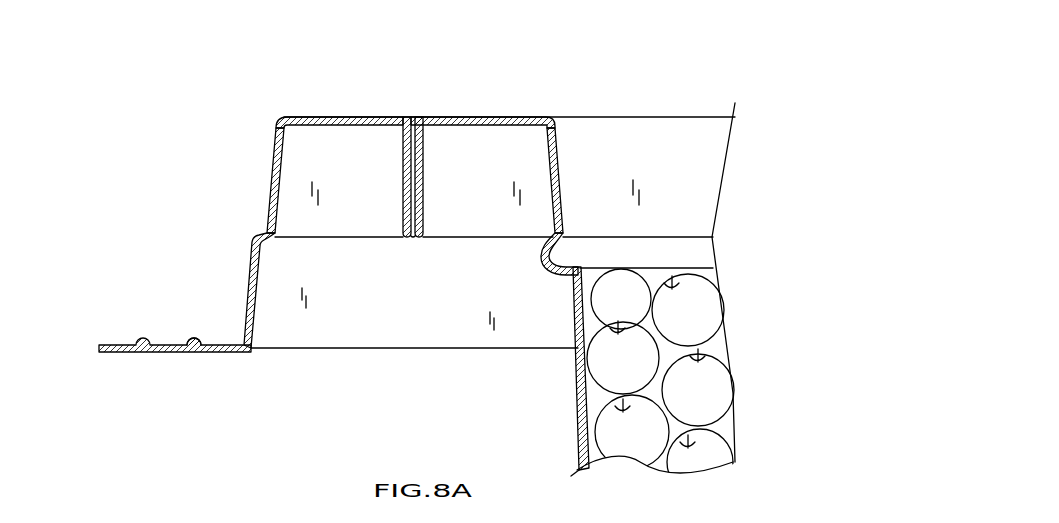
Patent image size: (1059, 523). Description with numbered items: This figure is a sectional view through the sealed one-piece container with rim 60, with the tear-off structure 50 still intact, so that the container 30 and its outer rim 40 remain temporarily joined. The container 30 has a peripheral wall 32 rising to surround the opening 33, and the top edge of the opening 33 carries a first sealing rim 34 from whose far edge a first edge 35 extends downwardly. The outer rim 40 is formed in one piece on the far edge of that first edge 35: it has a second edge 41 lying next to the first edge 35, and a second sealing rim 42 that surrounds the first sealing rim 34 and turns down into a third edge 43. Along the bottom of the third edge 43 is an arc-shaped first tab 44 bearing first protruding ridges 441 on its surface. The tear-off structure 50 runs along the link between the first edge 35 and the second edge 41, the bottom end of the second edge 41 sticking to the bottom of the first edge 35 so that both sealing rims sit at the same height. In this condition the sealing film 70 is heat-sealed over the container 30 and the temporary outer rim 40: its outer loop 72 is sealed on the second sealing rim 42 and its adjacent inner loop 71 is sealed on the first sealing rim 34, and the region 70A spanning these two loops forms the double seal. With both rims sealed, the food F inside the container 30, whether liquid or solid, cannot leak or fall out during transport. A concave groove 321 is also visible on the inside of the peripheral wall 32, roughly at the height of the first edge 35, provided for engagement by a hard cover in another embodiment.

The upper portion region 70A is at (720, 49).
The outer loop 72 is at (320, 116).
The inner loop 71 is at (442, 116).
The sealing film 70 is at (607, 116).
The third edge 43 is at (268, 182).
The outer rim 40 is at (331, 228).
The second sealing rim 42 is at (343, 113).
The first sealing rim 34 is at (482, 113).
The opening 33 is at (681, 160).
The concave groove 321 is at (567, 246).
The second edge 41 is at (402, 186).
The first edge 35 is at (424, 186).
The first tab 44 is at (112, 345).
The first protruding ridges 441 is at (194, 341).
The one-piece container with rim 60 is at (78, 112).
The tear-off structure 50 is at (412, 250).
The container 30 is at (492, 335).
The peripheral wall 32 is at (577, 418).
The food F is at (632, 444).